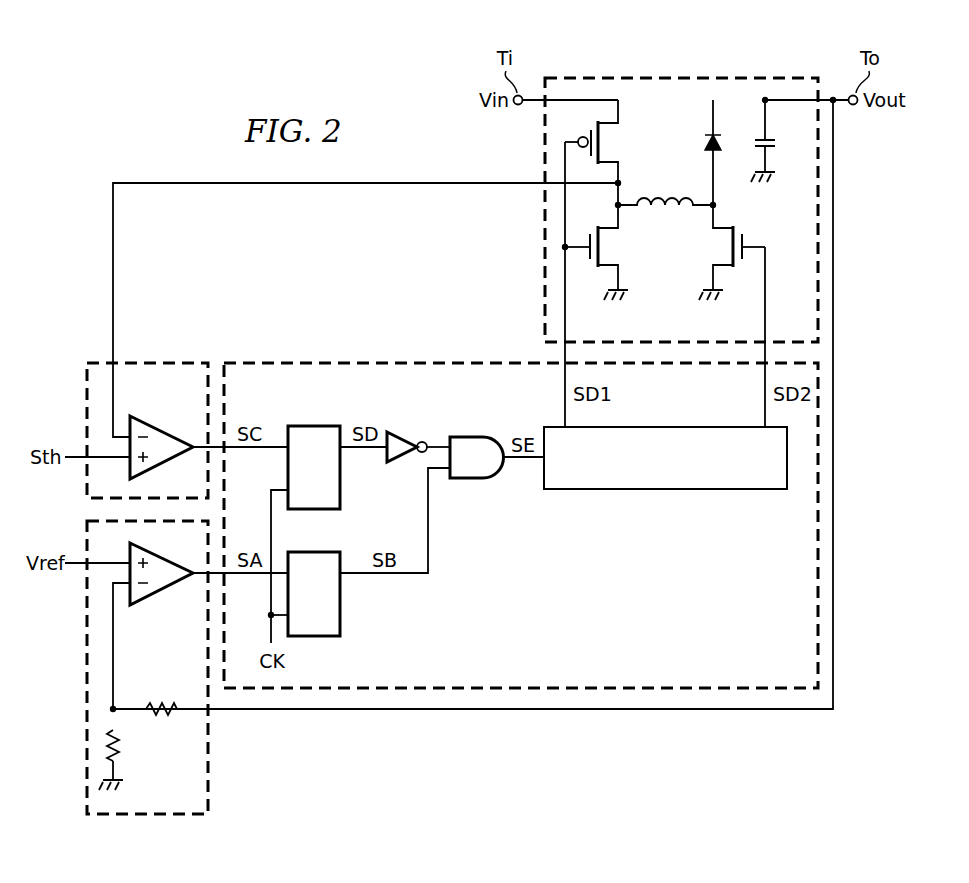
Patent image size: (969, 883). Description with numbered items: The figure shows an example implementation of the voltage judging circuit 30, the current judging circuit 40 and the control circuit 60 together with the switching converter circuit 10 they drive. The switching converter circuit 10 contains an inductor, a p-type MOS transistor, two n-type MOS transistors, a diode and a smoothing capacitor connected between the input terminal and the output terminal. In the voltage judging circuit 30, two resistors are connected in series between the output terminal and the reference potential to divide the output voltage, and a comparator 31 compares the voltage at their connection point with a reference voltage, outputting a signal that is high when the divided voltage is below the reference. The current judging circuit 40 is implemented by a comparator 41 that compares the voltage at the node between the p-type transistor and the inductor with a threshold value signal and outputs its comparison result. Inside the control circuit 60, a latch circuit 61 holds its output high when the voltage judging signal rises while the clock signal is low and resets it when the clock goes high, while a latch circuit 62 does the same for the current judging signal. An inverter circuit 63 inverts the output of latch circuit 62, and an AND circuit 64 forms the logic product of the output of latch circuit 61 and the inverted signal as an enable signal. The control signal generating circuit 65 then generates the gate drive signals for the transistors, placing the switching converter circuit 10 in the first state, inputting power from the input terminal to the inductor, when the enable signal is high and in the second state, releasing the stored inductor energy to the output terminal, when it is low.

The switching converter circuit 10 is at (692, 79).
The voltage judging circuit 30 is at (181, 667).
The comparator 31 is at (163, 592).
The current judging circuit 40 is at (147, 400).
The comparator 41 is at (163, 428).
The control circuit 60 is at (521, 495).
The latch circuit 61 is at (340, 605).
The latch circuit 62 is at (312, 425).
The inverter circuit 63 is at (405, 432).
The AND circuit 64 is at (478, 481).
The control signal generating circuit 65 is at (665, 490).